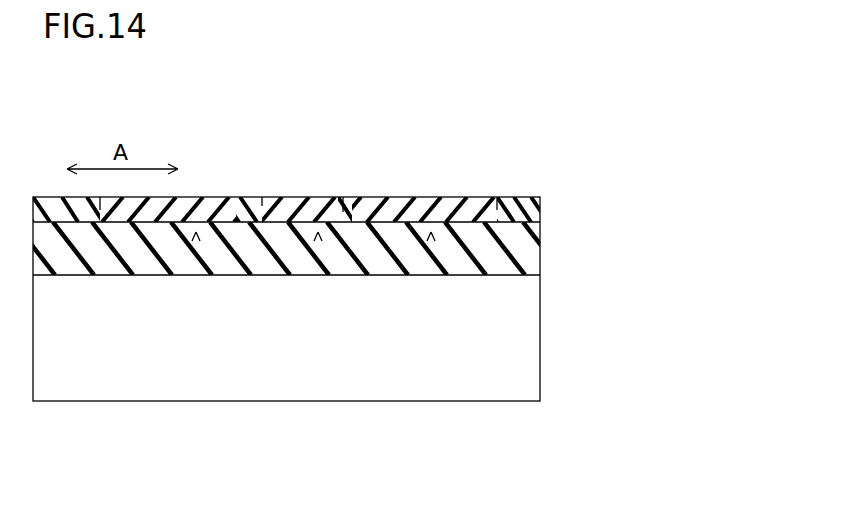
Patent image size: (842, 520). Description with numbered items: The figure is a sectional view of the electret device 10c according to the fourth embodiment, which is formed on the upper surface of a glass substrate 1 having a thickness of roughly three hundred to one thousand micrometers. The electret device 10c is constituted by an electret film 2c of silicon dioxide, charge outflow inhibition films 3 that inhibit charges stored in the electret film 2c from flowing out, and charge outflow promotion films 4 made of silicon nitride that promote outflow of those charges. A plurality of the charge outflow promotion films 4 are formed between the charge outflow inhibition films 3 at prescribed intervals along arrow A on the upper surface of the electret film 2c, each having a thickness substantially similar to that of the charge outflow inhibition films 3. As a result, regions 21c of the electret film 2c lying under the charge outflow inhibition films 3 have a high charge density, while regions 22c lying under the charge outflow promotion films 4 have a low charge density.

The substrate 1 is at (522, 331).
The electret film 2c is at (522, 249).
The charge outflow inhibition film 3 is at (235, 215).
The charge outflow promotion film 4 is at (303, 213).
The electret device 10c is at (623, 160).
The high charge density region 21c is at (196, 232).
The low charge density region 22c is at (318, 232).